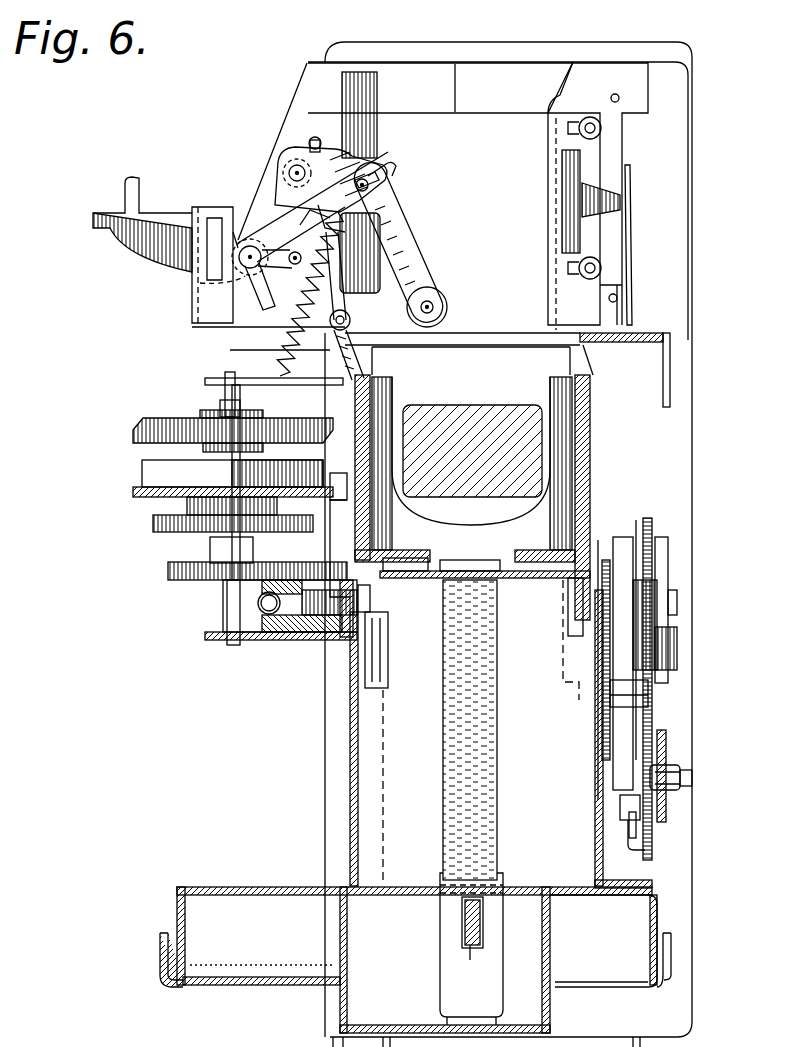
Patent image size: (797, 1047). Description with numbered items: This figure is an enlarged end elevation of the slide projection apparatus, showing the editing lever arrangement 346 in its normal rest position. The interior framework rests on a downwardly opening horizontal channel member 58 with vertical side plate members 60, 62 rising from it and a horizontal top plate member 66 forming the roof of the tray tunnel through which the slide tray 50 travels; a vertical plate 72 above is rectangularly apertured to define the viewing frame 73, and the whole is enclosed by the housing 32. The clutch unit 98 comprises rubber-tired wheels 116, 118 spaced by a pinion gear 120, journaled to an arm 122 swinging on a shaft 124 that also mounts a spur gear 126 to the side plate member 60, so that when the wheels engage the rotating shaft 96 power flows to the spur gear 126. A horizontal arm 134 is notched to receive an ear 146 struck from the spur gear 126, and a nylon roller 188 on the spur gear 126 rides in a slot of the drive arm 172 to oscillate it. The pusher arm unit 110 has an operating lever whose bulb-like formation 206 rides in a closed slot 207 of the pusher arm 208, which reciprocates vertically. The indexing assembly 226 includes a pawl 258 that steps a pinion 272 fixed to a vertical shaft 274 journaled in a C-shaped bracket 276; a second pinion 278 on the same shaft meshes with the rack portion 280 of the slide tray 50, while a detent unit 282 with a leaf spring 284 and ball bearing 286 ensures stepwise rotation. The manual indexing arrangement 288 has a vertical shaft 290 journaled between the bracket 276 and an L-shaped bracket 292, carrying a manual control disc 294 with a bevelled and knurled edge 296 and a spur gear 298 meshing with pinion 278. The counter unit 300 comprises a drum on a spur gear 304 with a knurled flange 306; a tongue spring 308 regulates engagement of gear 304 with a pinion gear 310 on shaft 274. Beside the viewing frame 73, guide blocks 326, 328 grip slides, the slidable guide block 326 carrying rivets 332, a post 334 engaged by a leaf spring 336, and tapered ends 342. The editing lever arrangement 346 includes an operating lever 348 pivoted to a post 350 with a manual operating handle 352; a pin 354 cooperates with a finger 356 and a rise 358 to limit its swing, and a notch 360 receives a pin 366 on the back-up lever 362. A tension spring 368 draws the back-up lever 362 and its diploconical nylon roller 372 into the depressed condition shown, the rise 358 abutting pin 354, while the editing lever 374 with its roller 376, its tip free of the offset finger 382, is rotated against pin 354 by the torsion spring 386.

The housing 32 is at (703, 965).
The slide tray 50 is at (562, 483).
The horizontal channel member 58 is at (418, 600).
The side plate member 60 is at (595, 834).
The side plate member 62 is at (360, 848).
The top plate member 66 is at (592, 358).
The vertical plate 72 is at (520, 92).
The viewing frame 73 is at (482, 118).
The rotating shaft 96 is at (597, 588).
The clutch unit 98 is at (682, 550).
The pusher arm unit 110 is at (430, 936).
The rubber-tired wheel 116 is at (621, 535).
The rubber-tired wheel 118 is at (668, 537).
The pinion gear 120 is at (650, 583).
The arm 122 is at (602, 642).
The shaft 124 is at (636, 697).
The spur gear 126 is at (646, 520).
The horizontal arm 134 is at (652, 860).
The ear 146 is at (630, 797).
The drive arm 172 is at (665, 738).
The nylon roller 188 is at (680, 768).
The bulb-like formation 206 is at (462, 932).
The closed slot 207 is at (478, 944).
The pusher arm 208 is at (452, 716).
The indexing assembly 226 is at (292, 677).
The pawl 258 is at (392, 610).
The pinion 272 is at (350, 665).
The vertical shaft 274 is at (310, 638).
The C-shaped bracket 276 is at (198, 645).
The second pinion 278 is at (366, 572).
The rack portion 280 is at (430, 576).
The detent unit 282 is at (260, 638).
The leaf spring 284 is at (255, 605).
The ball bearing 286 is at (262, 613).
The manual indexing arrangement 288 is at (128, 475).
The vertical shaft 290 is at (227, 593).
The L-shaped bracket 292 is at (253, 378).
The manual control disc 294 is at (130, 426).
The bevelled and knurled edge 296 is at (177, 418).
The spur gear 298 is at (172, 562).
The counter unit 300 is at (125, 502).
The spur gear 304 is at (123, 498).
The knurled flange 306 is at (128, 493).
The tongue spring 308 is at (352, 460).
The pinion gear 310 is at (356, 540).
The guide block 326 is at (572, 110).
The guide block 328 is at (350, 108).
The rivets 332 is at (601, 128).
The post 334 is at (583, 187).
The leaf spring 336 is at (631, 170).
The tapered upper and lower ends 342 is at (552, 112).
The editing lever arrangement 346 is at (214, 168).
The operating lever 348 is at (207, 237).
The post 350 is at (200, 283).
The manual operating handle 352 is at (107, 215).
The pin 354 is at (285, 275).
The finger 356 is at (240, 290).
The rise 358 is at (316, 218).
The notch 360 is at (372, 185).
The back-up lever 362 is at (395, 228).
The pin 366 is at (382, 166).
The tension spring 368 is at (296, 348).
The diploconical nylon roller 372 is at (438, 300).
The editing lever 374 is at (332, 306).
The diploconical roller 376 is at (392, 244).
The offset finger 382 is at (353, 200).
The torsion spring 386 is at (280, 152).